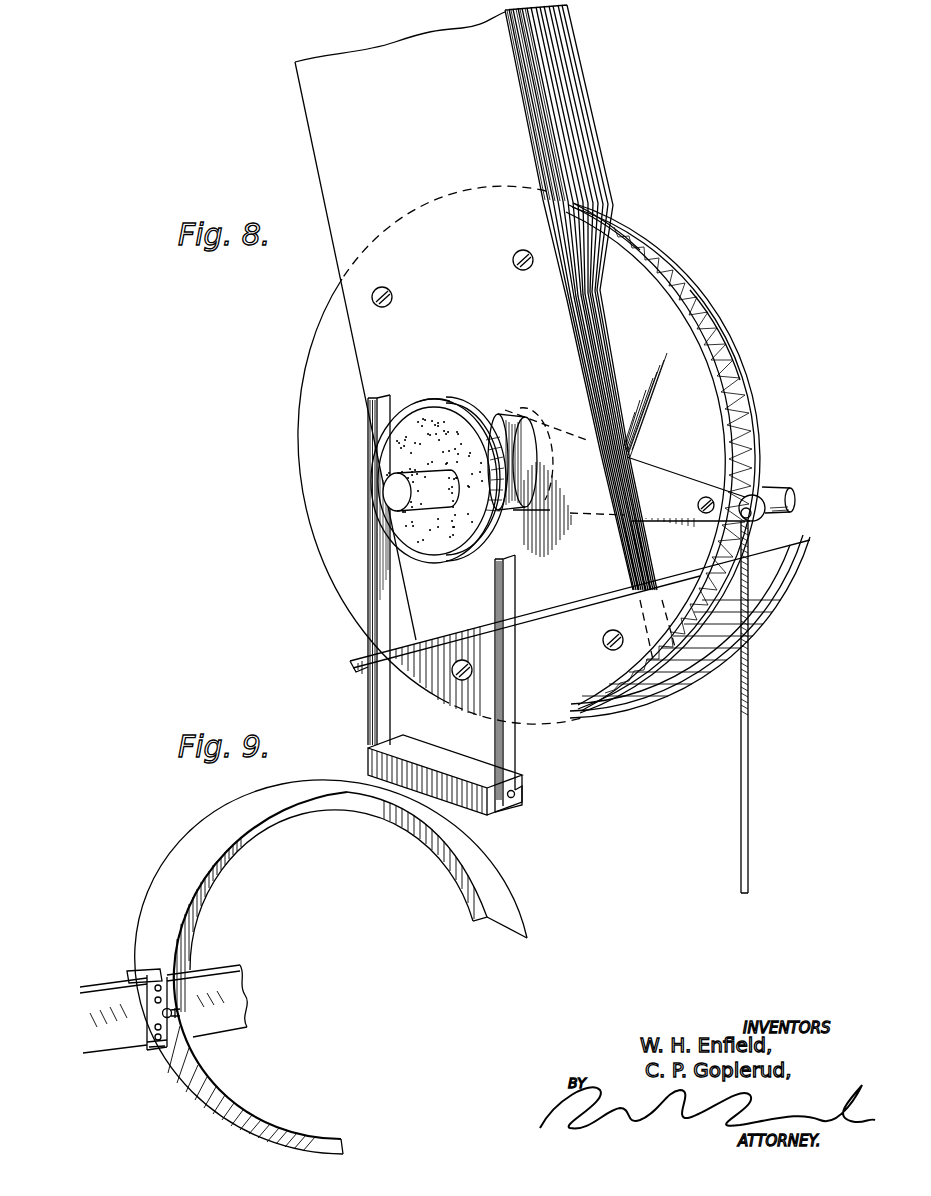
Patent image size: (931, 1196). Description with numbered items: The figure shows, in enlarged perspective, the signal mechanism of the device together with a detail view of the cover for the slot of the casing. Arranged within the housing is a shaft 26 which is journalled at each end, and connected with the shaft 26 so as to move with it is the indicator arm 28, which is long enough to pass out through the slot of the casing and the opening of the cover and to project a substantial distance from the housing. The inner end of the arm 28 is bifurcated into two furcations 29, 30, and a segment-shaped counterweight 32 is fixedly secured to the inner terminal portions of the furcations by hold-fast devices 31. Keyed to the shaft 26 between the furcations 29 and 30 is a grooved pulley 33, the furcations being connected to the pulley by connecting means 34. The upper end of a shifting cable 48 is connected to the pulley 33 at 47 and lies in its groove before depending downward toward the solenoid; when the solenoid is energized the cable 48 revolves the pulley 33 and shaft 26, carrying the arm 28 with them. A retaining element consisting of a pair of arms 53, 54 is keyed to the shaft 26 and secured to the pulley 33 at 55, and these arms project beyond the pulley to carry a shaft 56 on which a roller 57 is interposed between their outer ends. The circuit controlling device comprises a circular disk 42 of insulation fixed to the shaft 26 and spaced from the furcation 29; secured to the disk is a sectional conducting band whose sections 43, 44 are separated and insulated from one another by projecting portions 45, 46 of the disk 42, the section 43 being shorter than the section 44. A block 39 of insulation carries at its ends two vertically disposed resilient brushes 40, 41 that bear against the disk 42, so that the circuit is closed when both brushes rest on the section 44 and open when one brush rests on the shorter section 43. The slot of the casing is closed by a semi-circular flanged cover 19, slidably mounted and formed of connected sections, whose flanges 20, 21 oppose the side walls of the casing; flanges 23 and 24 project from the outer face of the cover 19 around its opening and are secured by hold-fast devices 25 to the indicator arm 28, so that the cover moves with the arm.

In FIG. 9, the semi-circular flanged cover 19 is at (225, 818).
In FIG. 9, the flange of the cover 20 is at (308, 808).
In FIG. 9, the flange of the cover 21 is at (435, 848).
In FIG. 9, the flange 23 is at (142, 970).
In FIG. 9, the flange 24 is at (157, 1048).
In FIG. 9, the hold-fast devices 25 is at (163, 1017).
In FIG. 8, the shaft 26 is at (398, 495).
In FIG. 8, the indicator arm 28 is at (580, 87).
In FIG. 8, the furcation 29 is at (570, 242).
In FIG. 8, the furcation 30 is at (610, 202).
In FIG. 8, the hold-fast devices 31 is at (452, 674).
In FIG. 8, the segment-shaped counterweight 32 is at (570, 698).
In FIG. 8, the grooved pulley 33 is at (665, 310).
In FIG. 8, the connecting means 34 is at (513, 265).
In FIG. 8, the block of insulation 39 is at (467, 767).
In FIG. 8, the brush 40 is at (377, 598).
In FIG. 8, the brush 41 is at (508, 649).
In FIG. 8, the circular disk of insulation 42 is at (393, 462).
In FIG. 8, the band section 43 is at (468, 420).
In FIG. 8, the band section 44 is at (387, 446).
In FIG. 8, the projecting portion of the disk 45 is at (436, 404).
In FIG. 8, the projecting portion of the disk 46 is at (507, 504).
In FIG. 8, the connection of cable to pulley 47 is at (733, 360).
In FIG. 8, the shifting cable 48 is at (749, 657).
In FIG. 8, the arm of retaining element 53 is at (668, 485).
In FIG. 8, the arm of retaining element 54 is at (762, 483).
In FIG. 8, the securing point 55 is at (705, 497).
In FIG. 8, the shaft 56 is at (764, 520).
In FIG. 8, the roller 57 is at (782, 487).